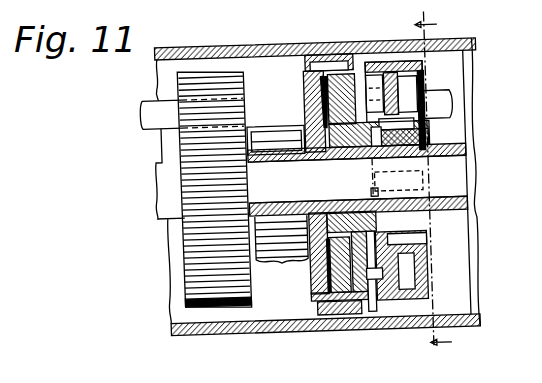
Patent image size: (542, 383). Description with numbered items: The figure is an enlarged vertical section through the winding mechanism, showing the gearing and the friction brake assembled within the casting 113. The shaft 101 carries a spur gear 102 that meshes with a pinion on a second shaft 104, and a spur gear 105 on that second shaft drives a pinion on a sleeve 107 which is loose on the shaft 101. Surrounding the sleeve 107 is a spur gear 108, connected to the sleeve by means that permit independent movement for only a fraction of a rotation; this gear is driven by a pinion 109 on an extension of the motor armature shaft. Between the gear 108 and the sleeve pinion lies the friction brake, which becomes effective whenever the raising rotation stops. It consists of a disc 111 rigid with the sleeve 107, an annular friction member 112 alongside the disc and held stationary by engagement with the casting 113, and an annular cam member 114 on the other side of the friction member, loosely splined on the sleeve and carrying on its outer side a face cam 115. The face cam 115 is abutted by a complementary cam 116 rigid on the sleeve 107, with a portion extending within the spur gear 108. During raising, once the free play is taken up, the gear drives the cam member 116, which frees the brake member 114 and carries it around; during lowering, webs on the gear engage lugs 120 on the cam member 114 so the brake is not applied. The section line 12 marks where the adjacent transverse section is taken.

The section line 12- 12 is at (433, 184).
The shaft 101 is at (166, 193).
The spur gear 102 is at (182, 274).
The shaft 104 is at (282, 149).
The spur gear 105 is at (269, 295).
The sleeve 107 is at (462, 211).
The spur gear 108 is at (429, 292).
The pinion 109 is at (431, 86).
The disc 111 is at (310, 285).
The annular friction member 112 is at (312, 300).
The casting 113 is at (201, 327).
The annular cam member 114 is at (310, 268).
The face cam 115 is at (370, 180).
The complementary cam 116 is at (424, 226).
The lugs 120 is at (381, 275).